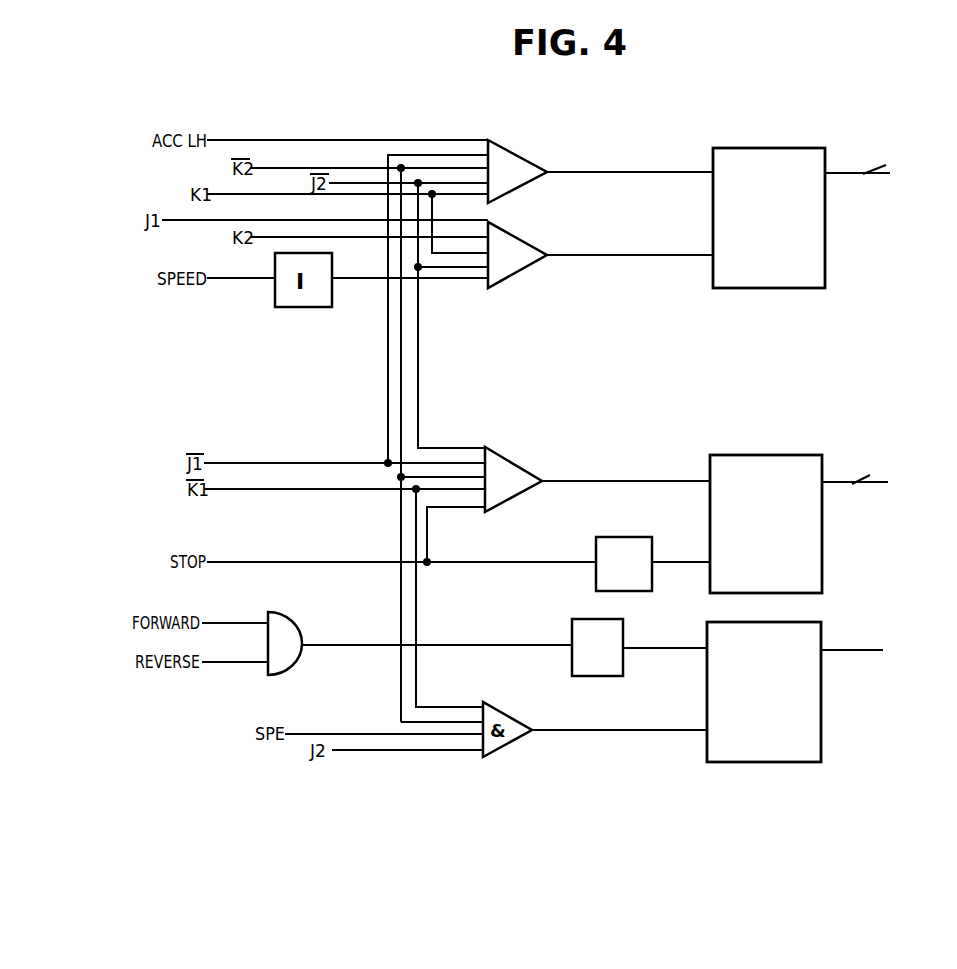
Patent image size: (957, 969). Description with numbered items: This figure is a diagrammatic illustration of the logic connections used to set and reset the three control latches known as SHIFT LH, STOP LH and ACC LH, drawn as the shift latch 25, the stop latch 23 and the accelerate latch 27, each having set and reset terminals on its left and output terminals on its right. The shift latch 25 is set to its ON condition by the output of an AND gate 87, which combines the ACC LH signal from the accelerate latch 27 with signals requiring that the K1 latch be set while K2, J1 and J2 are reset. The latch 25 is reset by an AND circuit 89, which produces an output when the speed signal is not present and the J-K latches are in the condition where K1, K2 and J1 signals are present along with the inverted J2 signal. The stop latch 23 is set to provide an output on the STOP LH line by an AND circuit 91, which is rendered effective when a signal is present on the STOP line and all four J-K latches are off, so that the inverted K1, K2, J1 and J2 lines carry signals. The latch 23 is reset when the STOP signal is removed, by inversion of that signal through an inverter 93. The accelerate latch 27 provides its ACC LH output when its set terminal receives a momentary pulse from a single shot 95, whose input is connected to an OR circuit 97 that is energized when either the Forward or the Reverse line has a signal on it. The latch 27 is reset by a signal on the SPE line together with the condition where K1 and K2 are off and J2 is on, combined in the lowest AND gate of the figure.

The AND gate 87 is at (527, 163).
The AND circuit 89 is at (525, 242).
The AND circuit 91 is at (505, 457).
The inverter 93 is at (630, 538).
The single shot 95 is at (623, 628).
The OR circuit 97 is at (287, 622).
The SHIFT LH latch 25 is at (825, 232).
The stop latch 23 is at (818, 459).
The accelerate latch 27 is at (821, 698).